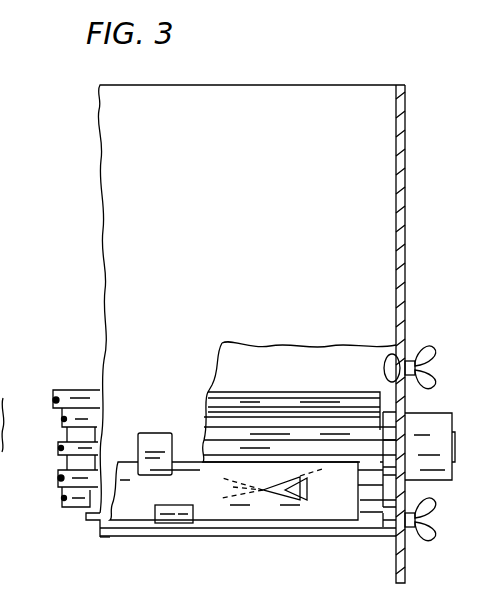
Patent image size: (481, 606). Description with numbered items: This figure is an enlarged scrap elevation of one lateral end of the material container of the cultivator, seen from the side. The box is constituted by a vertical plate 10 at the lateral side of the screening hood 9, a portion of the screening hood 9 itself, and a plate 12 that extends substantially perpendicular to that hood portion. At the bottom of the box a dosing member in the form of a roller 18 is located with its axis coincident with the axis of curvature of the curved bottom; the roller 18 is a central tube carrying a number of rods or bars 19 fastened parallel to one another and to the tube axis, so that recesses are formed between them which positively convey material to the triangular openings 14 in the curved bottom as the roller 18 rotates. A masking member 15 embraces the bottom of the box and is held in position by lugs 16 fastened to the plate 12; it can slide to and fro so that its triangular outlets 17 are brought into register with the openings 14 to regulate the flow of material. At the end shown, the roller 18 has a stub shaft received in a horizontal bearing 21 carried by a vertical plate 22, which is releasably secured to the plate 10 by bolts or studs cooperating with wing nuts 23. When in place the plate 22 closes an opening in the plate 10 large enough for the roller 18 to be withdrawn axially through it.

The screening hood 9 is at (118, 536).
The vertical plate 10 is at (397, 140).
The plate 12 is at (113, 112).
The triangular opening 14 is at (232, 487).
The masking member 15 is at (237, 518).
The lug 16 is at (170, 505).
The triangular outlet 17 is at (305, 489).
The roller 18 is at (322, 372).
The rod or bar 19 is at (247, 420).
The horizontal bearing 21 is at (433, 427).
The vertical plate 22 is at (405, 540).
The wing nut 23 is at (426, 347).